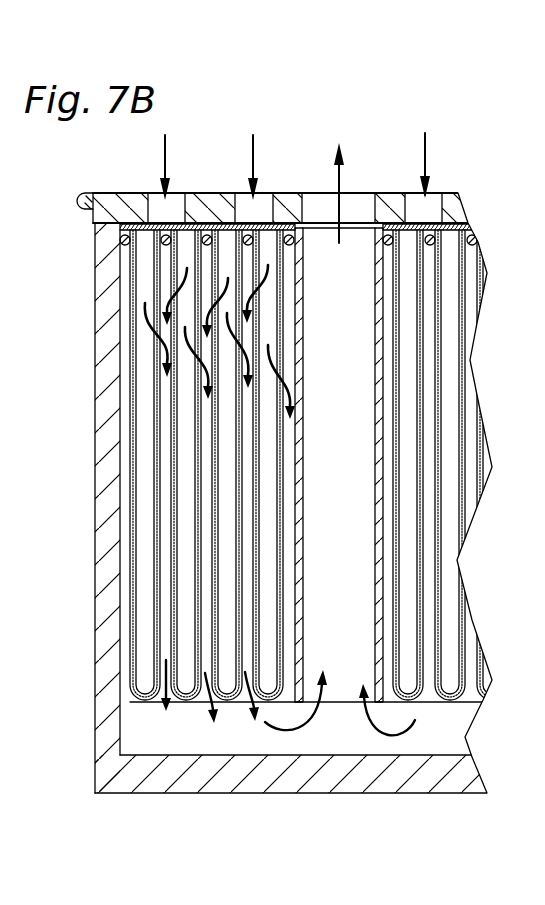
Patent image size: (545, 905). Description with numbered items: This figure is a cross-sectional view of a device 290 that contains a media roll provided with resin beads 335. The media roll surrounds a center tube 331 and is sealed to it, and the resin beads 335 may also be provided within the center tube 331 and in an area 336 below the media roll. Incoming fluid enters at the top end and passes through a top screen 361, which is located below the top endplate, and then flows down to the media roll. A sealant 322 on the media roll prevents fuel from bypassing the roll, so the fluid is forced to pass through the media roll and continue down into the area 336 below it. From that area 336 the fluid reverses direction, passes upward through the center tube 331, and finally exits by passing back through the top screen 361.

The device 290 is at (405, 143).
The top screen 361 is at (172, 253).
The sealant 322 is at (168, 258).
The resin beads 335 is at (167, 392).
The center tube 331 is at (300, 583).
The area below the media roll 336 is at (210, 728).